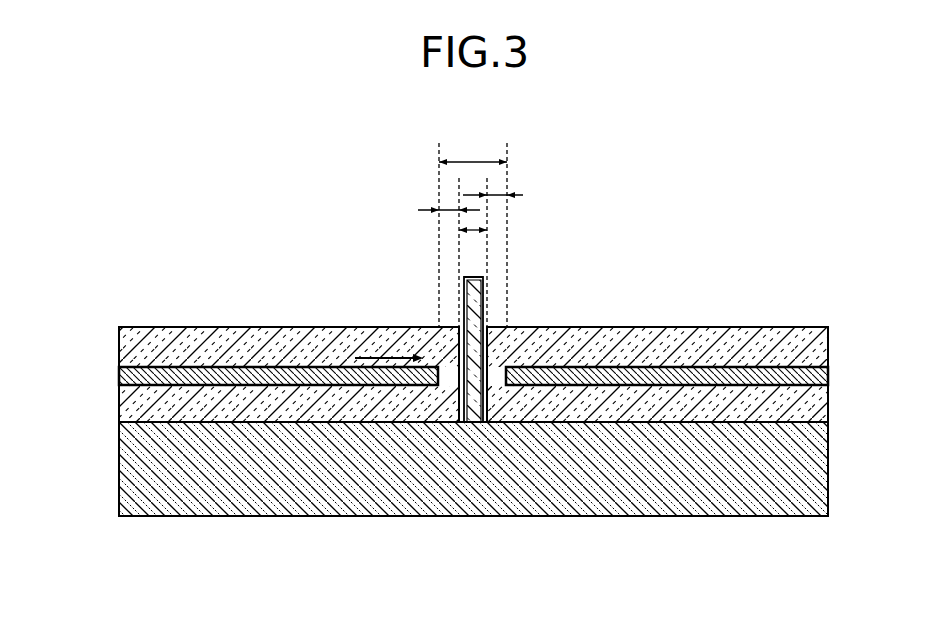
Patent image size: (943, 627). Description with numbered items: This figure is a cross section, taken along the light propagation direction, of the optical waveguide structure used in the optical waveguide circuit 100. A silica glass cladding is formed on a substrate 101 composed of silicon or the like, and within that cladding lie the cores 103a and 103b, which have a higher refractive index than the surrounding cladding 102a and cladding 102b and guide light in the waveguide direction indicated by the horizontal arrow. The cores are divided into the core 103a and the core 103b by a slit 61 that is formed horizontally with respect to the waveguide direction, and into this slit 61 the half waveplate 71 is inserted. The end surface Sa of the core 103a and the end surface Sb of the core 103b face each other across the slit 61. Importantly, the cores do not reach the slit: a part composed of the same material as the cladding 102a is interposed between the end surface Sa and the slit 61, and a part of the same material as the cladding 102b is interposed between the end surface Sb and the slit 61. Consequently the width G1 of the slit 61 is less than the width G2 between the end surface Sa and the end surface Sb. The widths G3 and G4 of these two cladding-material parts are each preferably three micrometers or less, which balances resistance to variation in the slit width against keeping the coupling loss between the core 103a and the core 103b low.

The optical waveguide circuit 100 is at (690, 219).
The substrate 101 is at (818, 462).
The cladding 102a is at (132, 332).
The cladding 102b is at (818, 333).
The core 103a is at (128, 378).
The core 103b is at (818, 378).
The slit 61 is at (457, 323).
The half waveplate 71 is at (473, 293).
The end surface Sa is at (446, 373).
The end surface Sb is at (497, 374).
The width of the slit G1 is at (470, 232).
The width between the end surfaces G2 is at (473, 232).
The width of the cladding part G3 is at (443, 210).
The width of the cladding part G4 is at (493, 194).